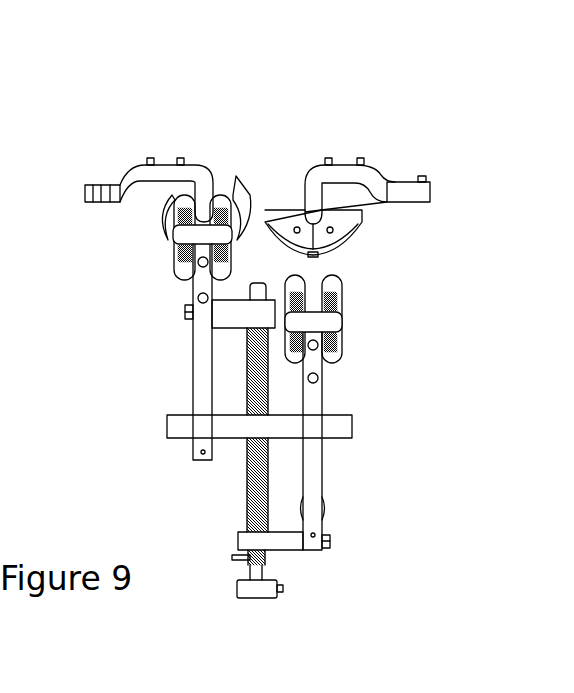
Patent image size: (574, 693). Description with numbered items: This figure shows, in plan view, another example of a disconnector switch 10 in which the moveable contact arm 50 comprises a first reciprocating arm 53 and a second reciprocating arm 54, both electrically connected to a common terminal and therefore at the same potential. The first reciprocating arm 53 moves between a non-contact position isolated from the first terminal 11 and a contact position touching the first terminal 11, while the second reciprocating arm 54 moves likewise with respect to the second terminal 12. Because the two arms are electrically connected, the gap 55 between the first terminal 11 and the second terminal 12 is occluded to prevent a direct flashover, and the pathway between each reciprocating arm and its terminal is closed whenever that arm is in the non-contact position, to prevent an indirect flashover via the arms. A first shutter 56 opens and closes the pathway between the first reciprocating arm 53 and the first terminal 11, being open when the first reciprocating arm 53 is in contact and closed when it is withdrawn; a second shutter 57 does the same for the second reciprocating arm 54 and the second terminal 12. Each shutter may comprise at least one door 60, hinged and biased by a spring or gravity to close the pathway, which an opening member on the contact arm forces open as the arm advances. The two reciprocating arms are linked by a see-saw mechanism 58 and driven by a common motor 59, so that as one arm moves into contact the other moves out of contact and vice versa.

The disconnector switch 10 is at (133, 134).
The first terminal 11 is at (204, 182).
The second terminal 12 is at (309, 210).
The moveable contact arm 50 is at (158, 368).
The first reciprocating arm 53 is at (203, 281).
The second reciprocating arm 54 is at (313, 364).
The gap 55 is at (275, 158).
The first shutter 56 is at (132, 223).
The second shutter 57 is at (370, 224).
The see-saw mechanism 58 is at (248, 475).
The common motor 59 is at (262, 588).
The door 60 is at (317, 237).